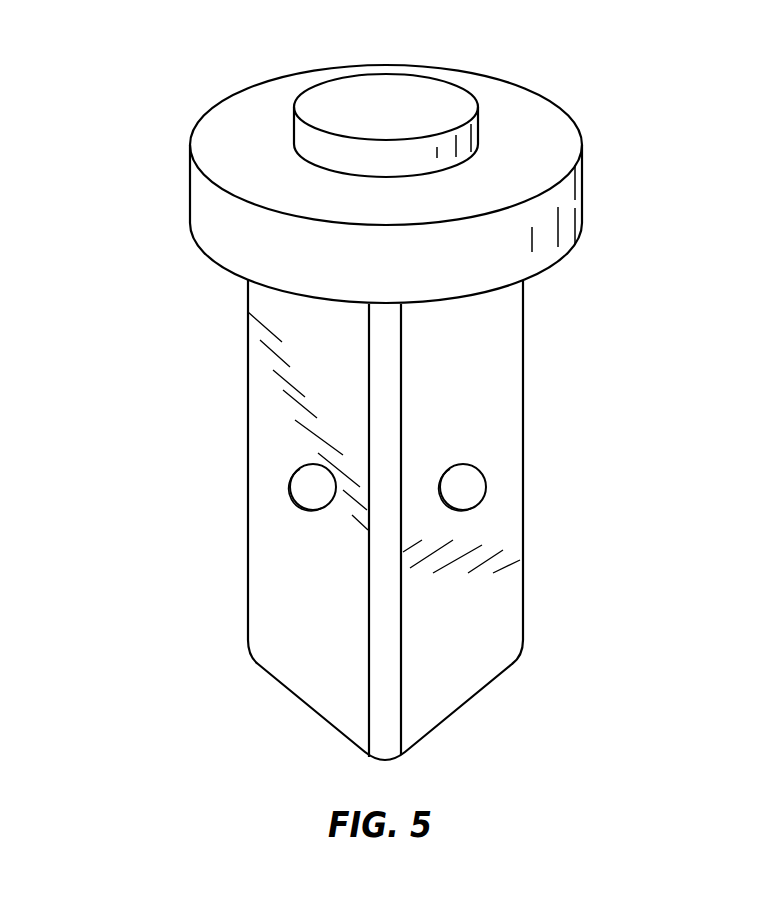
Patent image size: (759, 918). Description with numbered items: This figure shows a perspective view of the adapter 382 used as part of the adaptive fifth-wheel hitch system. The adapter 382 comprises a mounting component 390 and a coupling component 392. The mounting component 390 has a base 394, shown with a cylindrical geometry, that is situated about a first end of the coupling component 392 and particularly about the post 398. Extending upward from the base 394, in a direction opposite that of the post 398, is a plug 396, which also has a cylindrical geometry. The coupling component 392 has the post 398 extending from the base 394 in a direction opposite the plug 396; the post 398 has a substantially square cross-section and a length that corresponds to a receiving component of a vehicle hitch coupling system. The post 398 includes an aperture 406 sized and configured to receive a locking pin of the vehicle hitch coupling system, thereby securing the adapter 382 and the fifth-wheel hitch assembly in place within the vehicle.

The adapter 382 is at (563, 84).
The mounting component 390 is at (182, 50).
The coupling component 392 is at (190, 287).
The base 394 is at (565, 213).
The plug 396 is at (398, 100).
The post 398 is at (490, 346).
The aperture 406 is at (463, 487).